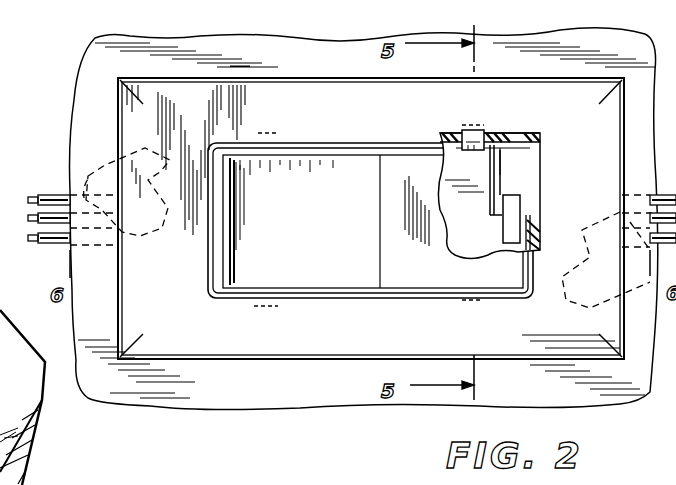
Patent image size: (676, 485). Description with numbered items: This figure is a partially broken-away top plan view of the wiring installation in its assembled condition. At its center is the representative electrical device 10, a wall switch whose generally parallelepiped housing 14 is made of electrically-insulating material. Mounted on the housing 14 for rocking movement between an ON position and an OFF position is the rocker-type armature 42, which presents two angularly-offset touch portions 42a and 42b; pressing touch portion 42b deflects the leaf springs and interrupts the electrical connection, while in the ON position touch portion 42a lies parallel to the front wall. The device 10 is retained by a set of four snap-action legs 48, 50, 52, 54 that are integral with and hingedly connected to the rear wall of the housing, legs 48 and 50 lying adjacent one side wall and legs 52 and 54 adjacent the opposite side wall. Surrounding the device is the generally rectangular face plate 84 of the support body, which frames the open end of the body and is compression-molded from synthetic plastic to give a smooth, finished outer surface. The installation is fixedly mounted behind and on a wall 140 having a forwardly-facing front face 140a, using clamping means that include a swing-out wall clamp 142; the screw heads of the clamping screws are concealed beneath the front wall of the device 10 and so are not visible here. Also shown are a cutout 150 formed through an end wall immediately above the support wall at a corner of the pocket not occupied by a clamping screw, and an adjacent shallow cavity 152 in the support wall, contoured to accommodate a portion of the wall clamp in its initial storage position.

The electrical device 10 is at (330, 182).
The housing 14 is at (225, 300).
The rocker-type armature 42 is at (345, 296).
The touch portion 42a is at (498, 278).
The touch portion 42b is at (320, 248).
The snap-action leg 48 is at (258, 308).
The snap-action leg 50 is at (470, 302).
The snap-action leg 52 is at (466, 128).
The snap-action leg 54 is at (267, 131).
The face plate 84 is at (560, 348).
The wall 140 is at (645, 372).
The front face 140a is at (36, 440).
The swing-out wall clamp 142 is at (108, 163).
The cutout 150 is at (540, 178).
The shallow cavity 152 is at (505, 175).